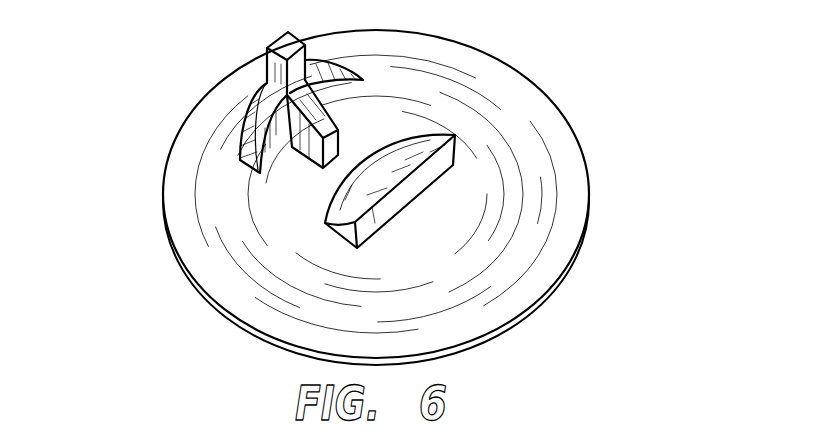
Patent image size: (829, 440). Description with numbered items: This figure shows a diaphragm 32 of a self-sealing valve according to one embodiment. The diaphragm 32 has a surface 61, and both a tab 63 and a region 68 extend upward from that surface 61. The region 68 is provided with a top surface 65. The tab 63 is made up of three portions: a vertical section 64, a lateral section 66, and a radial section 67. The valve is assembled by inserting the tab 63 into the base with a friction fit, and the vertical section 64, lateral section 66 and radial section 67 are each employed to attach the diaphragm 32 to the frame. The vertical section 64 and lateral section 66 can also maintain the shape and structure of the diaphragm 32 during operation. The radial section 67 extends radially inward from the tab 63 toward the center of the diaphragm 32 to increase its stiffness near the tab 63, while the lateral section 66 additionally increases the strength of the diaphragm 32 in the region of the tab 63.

The diaphragm 32 is at (545, 75).
The surface 61 is at (566, 191).
The tab 63 is at (244, 95).
The vertical section 64 is at (283, 37).
The top surface 65 is at (409, 157).
The lateral section 66 is at (255, 92).
The radial section 67 is at (338, 124).
The region 68 is at (473, 183).